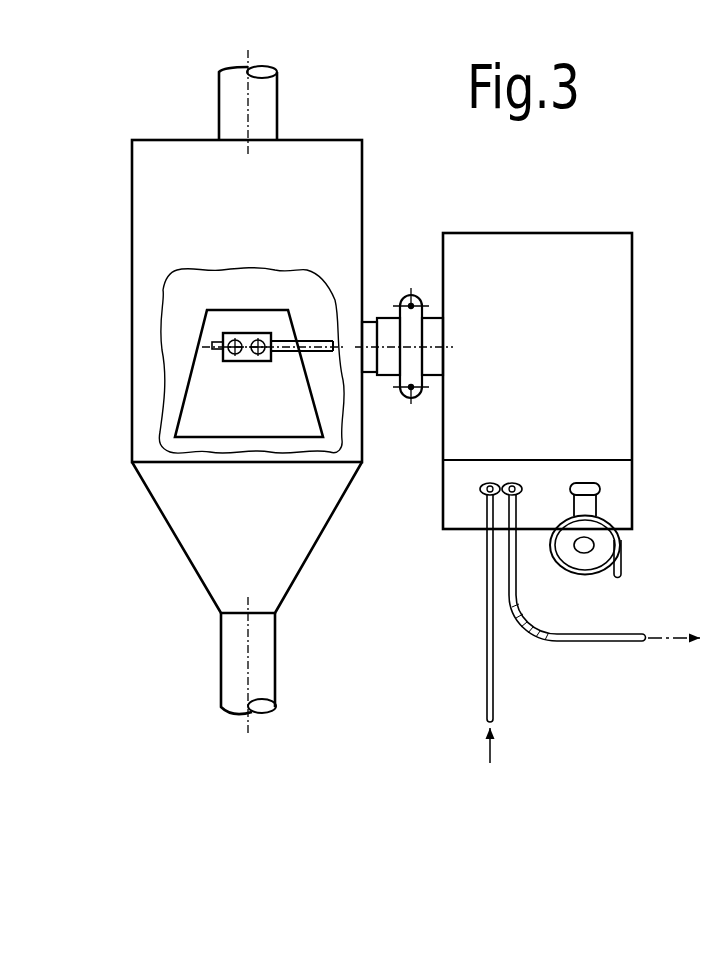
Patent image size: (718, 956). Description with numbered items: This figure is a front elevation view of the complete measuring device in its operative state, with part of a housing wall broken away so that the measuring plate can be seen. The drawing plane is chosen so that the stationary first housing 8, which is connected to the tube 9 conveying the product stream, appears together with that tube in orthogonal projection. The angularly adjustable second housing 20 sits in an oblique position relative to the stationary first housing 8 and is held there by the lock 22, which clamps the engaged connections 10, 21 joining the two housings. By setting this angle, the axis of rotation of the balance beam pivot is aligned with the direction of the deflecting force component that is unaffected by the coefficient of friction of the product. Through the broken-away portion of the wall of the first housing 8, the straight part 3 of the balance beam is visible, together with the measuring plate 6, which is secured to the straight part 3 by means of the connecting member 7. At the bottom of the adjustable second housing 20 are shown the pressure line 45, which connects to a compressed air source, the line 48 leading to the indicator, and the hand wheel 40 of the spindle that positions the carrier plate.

The straight part 3 is at (313, 339).
The measuring plate 6 is at (238, 419).
The connecting member 7 is at (222, 337).
The first housing 8 is at (236, 229).
The tube 9 is at (217, 100).
The connection 10 is at (371, 320).
The second housing 20 is at (518, 367).
The connection 21 is at (438, 379).
The lock 22 is at (407, 398).
The hand wheel 40 is at (623, 562).
The pressure line 45 is at (493, 660).
The line 48 is at (613, 643).